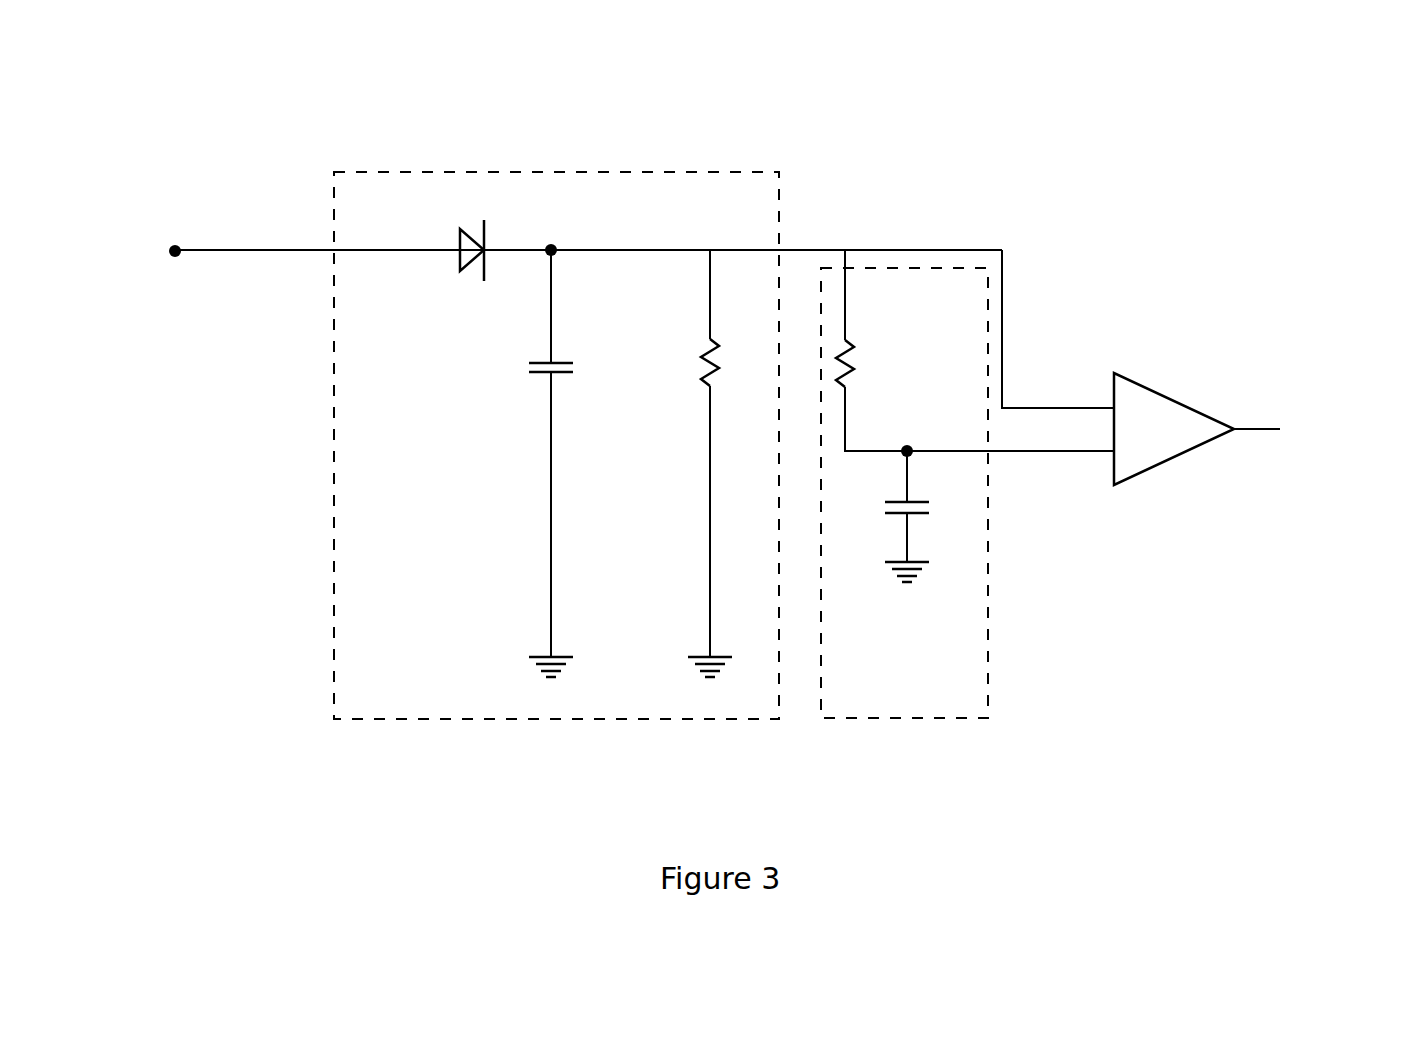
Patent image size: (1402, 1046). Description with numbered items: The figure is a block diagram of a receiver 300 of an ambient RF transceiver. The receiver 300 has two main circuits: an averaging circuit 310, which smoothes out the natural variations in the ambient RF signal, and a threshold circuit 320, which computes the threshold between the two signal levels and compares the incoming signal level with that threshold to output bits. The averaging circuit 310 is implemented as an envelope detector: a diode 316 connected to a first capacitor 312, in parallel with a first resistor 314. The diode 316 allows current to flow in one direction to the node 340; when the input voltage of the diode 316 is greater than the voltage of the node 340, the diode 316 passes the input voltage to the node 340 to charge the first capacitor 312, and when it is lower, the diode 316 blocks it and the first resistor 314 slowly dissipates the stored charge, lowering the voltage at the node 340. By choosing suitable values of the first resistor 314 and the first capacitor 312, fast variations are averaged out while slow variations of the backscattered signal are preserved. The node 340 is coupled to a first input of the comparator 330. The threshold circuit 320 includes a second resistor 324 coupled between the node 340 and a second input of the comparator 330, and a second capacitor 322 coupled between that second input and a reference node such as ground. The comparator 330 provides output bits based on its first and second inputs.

The receiver 300 is at (1240, 56).
The averaging circuit 310 is at (598, 172).
The capacitor C1 312 is at (532, 382).
The resistor R1 314 is at (692, 388).
The diode 316 is at (452, 238).
The threshold circuit 320 is at (935, 172).
The capacitor C2 322 is at (936, 514).
The resistor R2 324 is at (862, 345).
The comparator 330 is at (1190, 351).
The node 340 is at (610, 219).